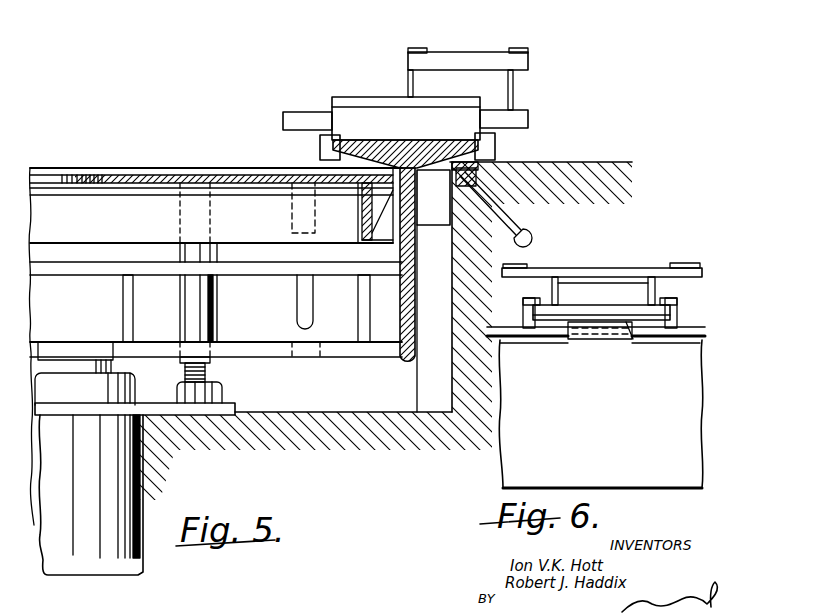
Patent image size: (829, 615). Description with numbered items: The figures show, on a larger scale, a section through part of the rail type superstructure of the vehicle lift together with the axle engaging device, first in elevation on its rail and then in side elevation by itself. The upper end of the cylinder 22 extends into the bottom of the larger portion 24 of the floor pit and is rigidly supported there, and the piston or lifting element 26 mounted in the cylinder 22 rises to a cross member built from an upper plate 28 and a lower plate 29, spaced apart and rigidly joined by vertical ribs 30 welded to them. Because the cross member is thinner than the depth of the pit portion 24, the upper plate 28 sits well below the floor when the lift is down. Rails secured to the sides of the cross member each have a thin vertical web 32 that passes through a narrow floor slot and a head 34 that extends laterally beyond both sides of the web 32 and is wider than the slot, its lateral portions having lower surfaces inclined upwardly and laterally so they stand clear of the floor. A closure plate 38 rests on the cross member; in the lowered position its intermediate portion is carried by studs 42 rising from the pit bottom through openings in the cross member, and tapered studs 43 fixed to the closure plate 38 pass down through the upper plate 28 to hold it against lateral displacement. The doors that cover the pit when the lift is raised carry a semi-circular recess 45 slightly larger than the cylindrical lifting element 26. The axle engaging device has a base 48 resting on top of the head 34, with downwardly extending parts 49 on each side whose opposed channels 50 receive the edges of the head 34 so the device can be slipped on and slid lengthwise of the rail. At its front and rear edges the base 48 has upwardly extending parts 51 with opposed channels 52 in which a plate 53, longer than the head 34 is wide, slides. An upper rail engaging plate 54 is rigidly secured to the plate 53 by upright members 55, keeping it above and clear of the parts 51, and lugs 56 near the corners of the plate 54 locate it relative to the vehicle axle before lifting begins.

In FIG. 5, the cylinder 22 is at (103, 466).
In FIG. 5, the larger portion of the pit 24 is at (386, 331).
In FIG. 5, the piston or lifting element 26 is at (76, 356).
In FIG. 5, the upper plate 28 is at (268, 265).
In FIG. 5, the lower plate 29 is at (247, 352).
In FIG. 5, the vertical ribs 30 is at (122, 296).
In FIG. 5, the vertical web 32 is at (418, 266).
In FIG. 5, the head 34 is at (394, 156).
In FIG. 5, the closure plate 38 is at (147, 184).
In FIG. 5, the studs 42 is at (193, 308).
In FIG. 5, the tapered studs 43 is at (291, 219).
In FIG. 5, the semi-circular recess 45 is at (80, 181).
In FIG. 5, the base 48 is at (453, 132).
In FIG. 6, the base 48 is at (636, 340).
In FIG. 5, the downwardly extending parts 49 is at (496, 145).
In FIG. 6, the downwardly extending parts 49 is at (591, 340).
In FIG. 5, the opposed channels 50 is at (319, 150).
In FIG. 5, the upwardly extending parts 51 is at (345, 120).
In FIG. 6, the upwardly extending parts 51 is at (523, 316).
In FIG. 6, the opposed channels 52 is at (531, 300).
In FIG. 5, the plate 53 is at (515, 115).
In FIG. 6, the plate 53 is at (643, 305).
In FIG. 5, the upper rail engaging plate 54 is at (470, 62).
In FIG. 6, the upper rail engaging plate 54 is at (638, 267).
In FIG. 6, the upright members 55 is at (562, 282).
In FIG. 5, the projections or lugs 56 is at (516, 50).
In FIG. 6, the projections or lugs 56 is at (530, 266).